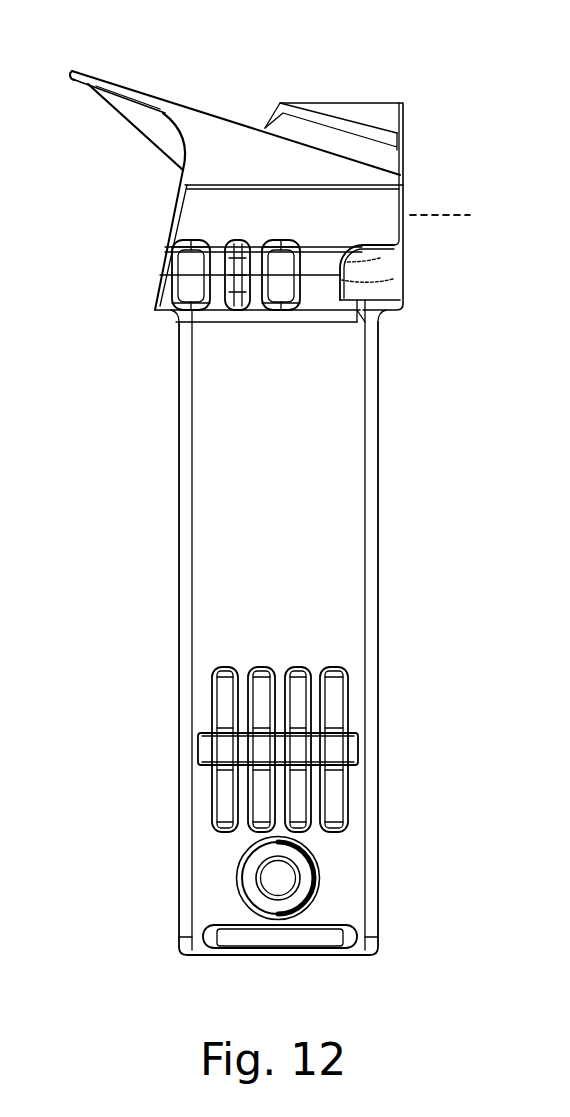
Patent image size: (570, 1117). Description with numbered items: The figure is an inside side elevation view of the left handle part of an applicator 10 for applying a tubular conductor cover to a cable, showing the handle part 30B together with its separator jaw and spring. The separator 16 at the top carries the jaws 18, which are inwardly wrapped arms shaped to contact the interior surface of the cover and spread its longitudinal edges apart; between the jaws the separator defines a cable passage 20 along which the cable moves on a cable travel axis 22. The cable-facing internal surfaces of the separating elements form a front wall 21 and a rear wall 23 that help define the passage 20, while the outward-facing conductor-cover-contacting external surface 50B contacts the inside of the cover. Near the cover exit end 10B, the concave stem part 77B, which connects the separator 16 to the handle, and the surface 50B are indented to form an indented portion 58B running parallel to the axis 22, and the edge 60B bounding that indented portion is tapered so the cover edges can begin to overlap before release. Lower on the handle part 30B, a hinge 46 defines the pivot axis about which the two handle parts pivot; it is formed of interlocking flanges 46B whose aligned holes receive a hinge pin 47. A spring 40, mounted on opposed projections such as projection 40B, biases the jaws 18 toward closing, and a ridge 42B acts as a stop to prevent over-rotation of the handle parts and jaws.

The applicator 10 is at (246, 508).
The separator 16 is at (204, 108).
The jaws 18 is at (180, 173).
The cable passage 20 is at (182, 228).
The front wall 21 is at (285, 190).
The cable travel axis 22 is at (441, 212).
The rear wall 23 is at (246, 250).
The conductor-cover-contacting external surface 50B is at (410, 195).
The cover exit end 10B is at (470, 195).
The indented portion 58B is at (400, 287).
The edge 60B is at (380, 258).
The concave stem part 77B is at (393, 279).
The handle part 30B is at (200, 600).
The interlocking flange 46B is at (338, 690).
The hinge 46 is at (397, 749).
The hinge pin 47 is at (350, 750).
The spring 40 is at (317, 862).
The projection 40B is at (248, 875).
The ridge 42B is at (253, 938).